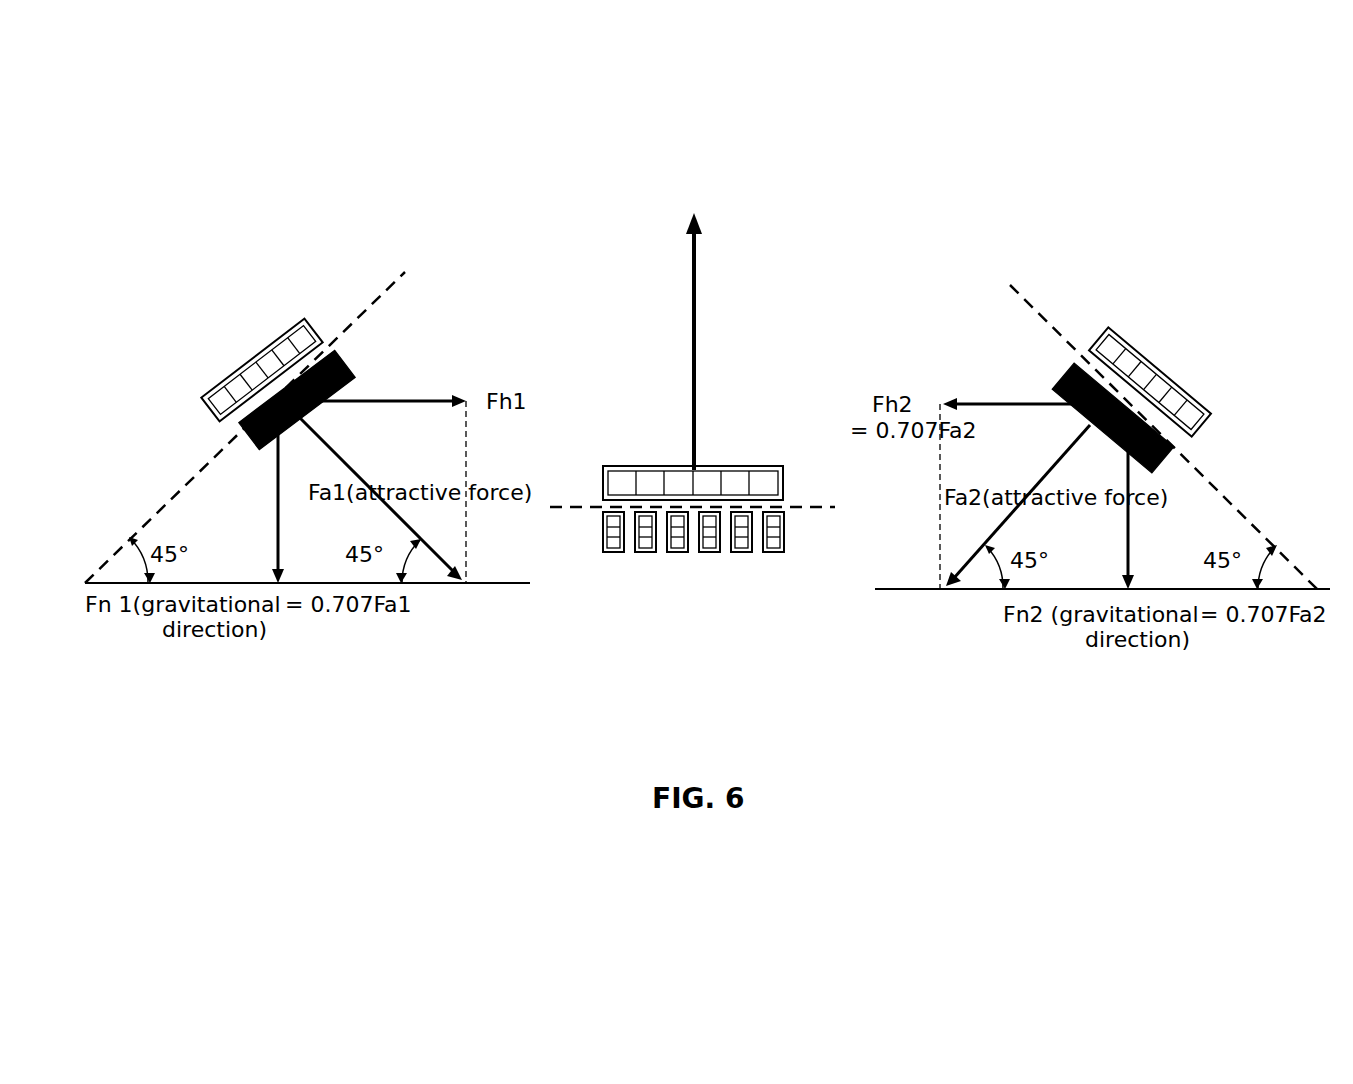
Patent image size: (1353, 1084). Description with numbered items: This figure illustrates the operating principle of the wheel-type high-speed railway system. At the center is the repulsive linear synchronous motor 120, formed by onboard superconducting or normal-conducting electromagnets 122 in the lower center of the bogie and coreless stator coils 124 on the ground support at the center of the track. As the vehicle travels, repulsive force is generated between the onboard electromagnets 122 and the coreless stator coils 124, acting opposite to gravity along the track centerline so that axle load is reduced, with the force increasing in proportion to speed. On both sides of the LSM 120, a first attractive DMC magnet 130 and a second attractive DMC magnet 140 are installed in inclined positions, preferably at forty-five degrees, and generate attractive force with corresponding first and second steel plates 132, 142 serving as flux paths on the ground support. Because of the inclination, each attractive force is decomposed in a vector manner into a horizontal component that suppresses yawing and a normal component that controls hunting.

The repulsive linear synchronous motor 120 is at (692, 457).
The onboard electromagnets 122 is at (645, 553).
The coreless stator coils 124 is at (725, 578).
The first attractive dynamic motion control magnet 130 is at (260, 352).
The first steel plate 132 is at (258, 452).
The second attractive dynamic motion control magnet 140 is at (1130, 348).
The second steel plate 142 is at (1160, 460).